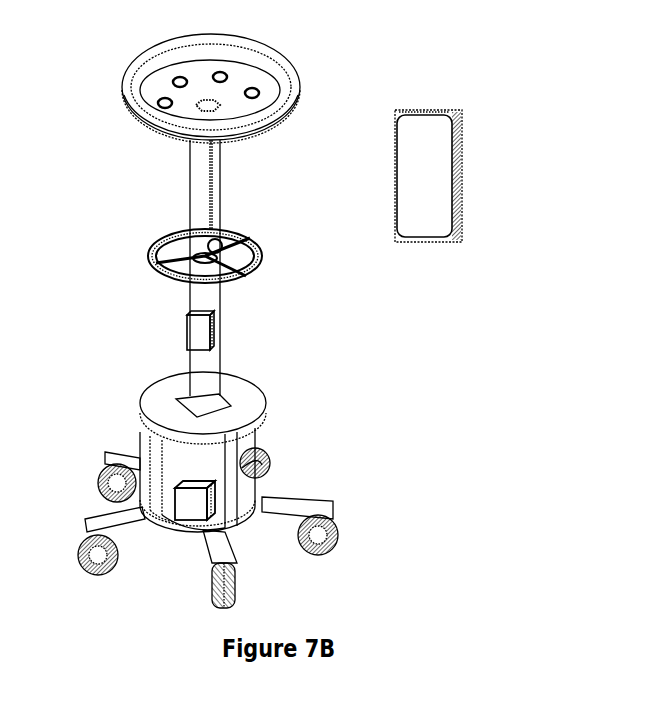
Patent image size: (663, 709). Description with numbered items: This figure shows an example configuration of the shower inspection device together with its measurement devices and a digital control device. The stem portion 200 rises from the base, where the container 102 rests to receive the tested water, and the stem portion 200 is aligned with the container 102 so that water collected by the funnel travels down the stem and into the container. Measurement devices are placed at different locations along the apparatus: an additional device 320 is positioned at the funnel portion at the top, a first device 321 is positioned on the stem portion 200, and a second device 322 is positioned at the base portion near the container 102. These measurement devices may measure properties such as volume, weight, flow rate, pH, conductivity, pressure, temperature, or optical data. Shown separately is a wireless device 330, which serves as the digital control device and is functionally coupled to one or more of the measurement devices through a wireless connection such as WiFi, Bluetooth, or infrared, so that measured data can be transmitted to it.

The additional device 320 is at (178, 80).
The stem portion 200 is at (202, 175).
The first device 321 is at (197, 342).
The container 102 is at (240, 479).
The second device 322 is at (193, 511).
The wireless device 330 is at (432, 110).